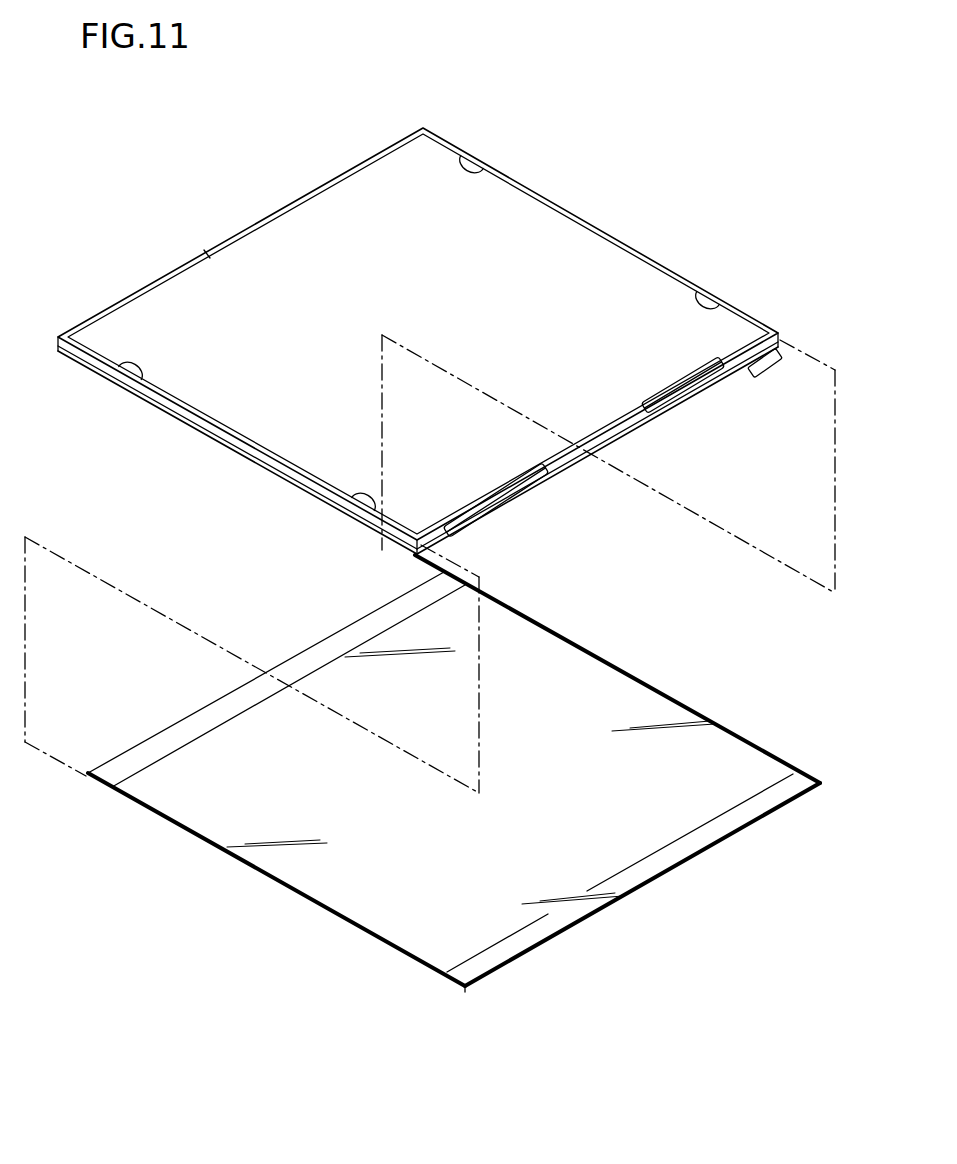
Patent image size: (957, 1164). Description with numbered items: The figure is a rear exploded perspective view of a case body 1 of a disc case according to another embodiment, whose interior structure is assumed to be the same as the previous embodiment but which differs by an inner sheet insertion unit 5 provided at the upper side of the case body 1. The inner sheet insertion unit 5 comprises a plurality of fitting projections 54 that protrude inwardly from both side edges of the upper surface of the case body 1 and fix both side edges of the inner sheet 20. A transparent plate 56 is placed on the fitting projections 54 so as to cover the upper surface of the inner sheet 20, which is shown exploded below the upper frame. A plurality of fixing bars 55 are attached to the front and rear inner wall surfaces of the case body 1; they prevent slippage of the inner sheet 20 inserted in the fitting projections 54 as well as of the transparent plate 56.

The case body 1 is at (450, 324).
The inner sheet insertion unit 5 is at (473, 135).
The inner sheet 20 is at (110, 773).
The fitting projections 54 is at (478, 170).
The fixing bars 55 is at (207, 255).
The transparent plate 56 is at (462, 975).